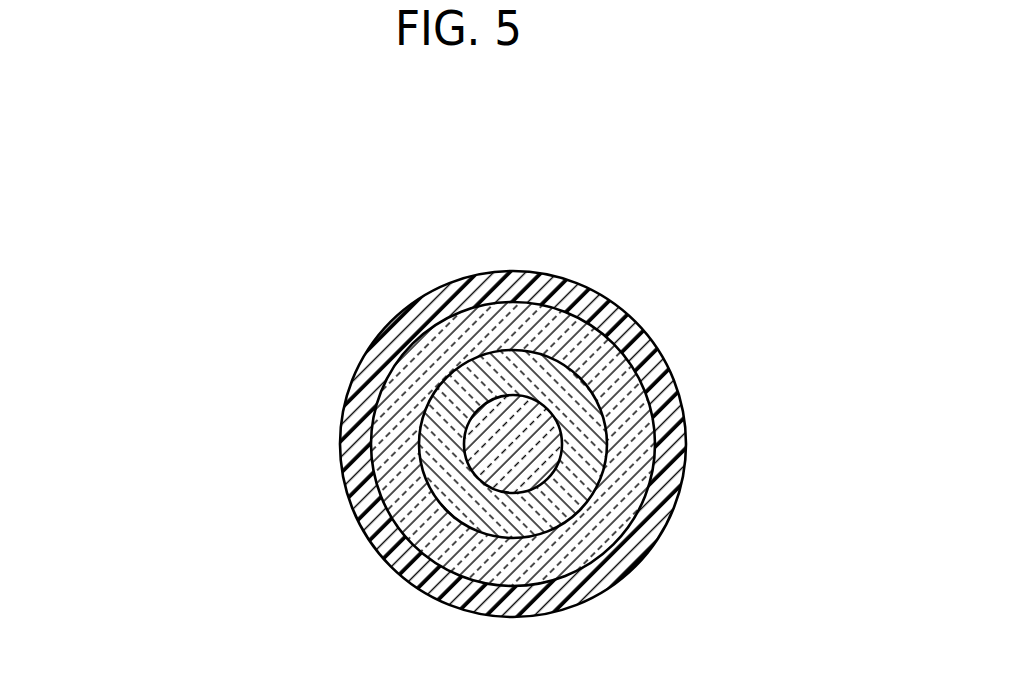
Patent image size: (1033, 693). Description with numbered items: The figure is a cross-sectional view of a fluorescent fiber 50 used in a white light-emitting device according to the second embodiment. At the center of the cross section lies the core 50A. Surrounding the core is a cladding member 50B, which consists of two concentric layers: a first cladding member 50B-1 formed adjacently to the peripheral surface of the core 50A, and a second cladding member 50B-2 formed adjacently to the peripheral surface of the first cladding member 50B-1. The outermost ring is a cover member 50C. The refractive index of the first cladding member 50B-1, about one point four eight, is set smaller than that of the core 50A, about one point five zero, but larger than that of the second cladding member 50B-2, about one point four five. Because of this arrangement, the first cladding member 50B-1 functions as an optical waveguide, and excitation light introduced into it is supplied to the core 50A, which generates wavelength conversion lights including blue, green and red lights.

The fluorescent fiber 50 is at (645, 238).
The core 50A is at (560, 412).
The cladding member 50B is at (195, 662).
The first cladding member 50B-1 is at (470, 517).
The second cladding member 50B-2 is at (462, 570).
The cover member 50C is at (676, 472).